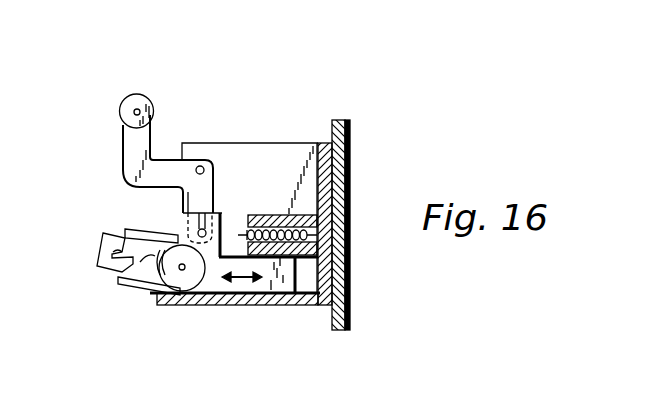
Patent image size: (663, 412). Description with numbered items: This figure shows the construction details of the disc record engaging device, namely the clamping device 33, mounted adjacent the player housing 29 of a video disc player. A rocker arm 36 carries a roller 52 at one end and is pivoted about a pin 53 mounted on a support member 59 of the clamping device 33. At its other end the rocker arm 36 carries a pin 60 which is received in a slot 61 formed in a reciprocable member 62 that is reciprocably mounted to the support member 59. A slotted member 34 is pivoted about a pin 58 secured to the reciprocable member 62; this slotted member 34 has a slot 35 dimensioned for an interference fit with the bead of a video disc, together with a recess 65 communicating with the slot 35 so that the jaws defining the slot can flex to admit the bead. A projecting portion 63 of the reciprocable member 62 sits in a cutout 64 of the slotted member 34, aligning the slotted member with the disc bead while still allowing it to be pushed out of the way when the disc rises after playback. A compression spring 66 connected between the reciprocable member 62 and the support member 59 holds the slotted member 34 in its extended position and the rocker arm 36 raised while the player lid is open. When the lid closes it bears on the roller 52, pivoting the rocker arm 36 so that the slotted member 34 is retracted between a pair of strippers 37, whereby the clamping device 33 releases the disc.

The player housing 29 is at (344, 190).
The clamping device 33 is at (292, 200).
The slotted member 34 is at (145, 240).
The slot 35 is at (102, 252).
The rocker arm 36 is at (127, 143).
The strippers 37 is at (138, 280).
The roller 52 is at (127, 97).
The pin 53 is at (200, 166).
The pin 58 is at (180, 270).
The support member 59 is at (278, 150).
The pin 60 is at (204, 238).
The slot 61 is at (205, 222).
The reciprocable member 62 is at (278, 283).
The projecting portion 63 is at (160, 250).
The cutout 64 is at (140, 258).
The recess 65 is at (117, 243).
The compression spring 66 is at (243, 230).